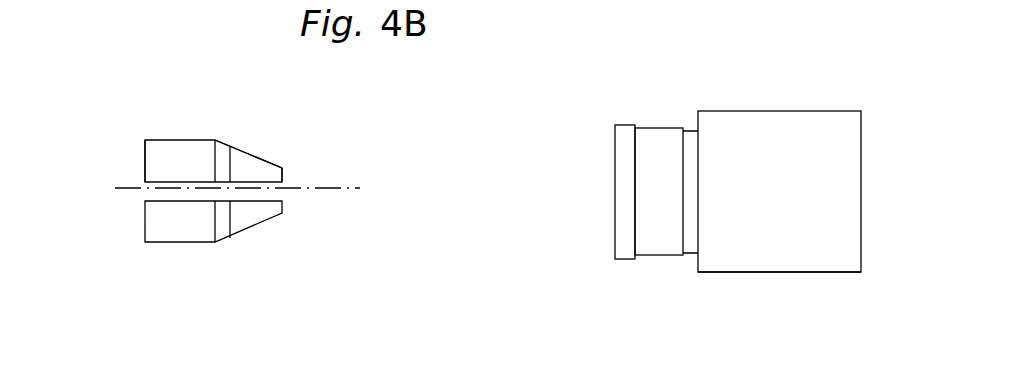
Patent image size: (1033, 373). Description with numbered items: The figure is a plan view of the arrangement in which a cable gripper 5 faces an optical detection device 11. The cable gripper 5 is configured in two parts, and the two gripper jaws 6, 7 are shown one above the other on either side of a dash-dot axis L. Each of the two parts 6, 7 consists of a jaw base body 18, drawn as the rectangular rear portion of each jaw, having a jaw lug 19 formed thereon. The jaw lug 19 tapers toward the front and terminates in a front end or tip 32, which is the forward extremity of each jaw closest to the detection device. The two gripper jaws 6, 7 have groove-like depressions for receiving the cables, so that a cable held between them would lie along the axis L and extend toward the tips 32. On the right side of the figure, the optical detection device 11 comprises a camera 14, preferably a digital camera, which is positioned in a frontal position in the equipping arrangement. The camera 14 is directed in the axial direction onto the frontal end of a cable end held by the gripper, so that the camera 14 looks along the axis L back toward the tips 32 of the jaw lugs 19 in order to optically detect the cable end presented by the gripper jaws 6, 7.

The cable gripper 5 is at (227, 122).
The gripper jaw 6 is at (167, 152).
The gripper jaw 7 is at (158, 230).
The jaw base body 18 is at (148, 167).
The jaw lug 19 is at (247, 167).
The front end or tip 32 is at (285, 173).
The longitudinal axis L is at (140, 190).
The optical detection device 11 is at (803, 105).
The camera 14 is at (752, 260).